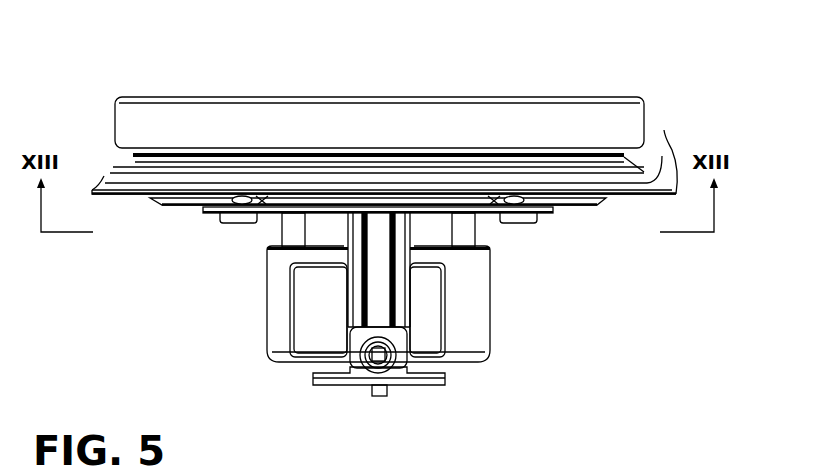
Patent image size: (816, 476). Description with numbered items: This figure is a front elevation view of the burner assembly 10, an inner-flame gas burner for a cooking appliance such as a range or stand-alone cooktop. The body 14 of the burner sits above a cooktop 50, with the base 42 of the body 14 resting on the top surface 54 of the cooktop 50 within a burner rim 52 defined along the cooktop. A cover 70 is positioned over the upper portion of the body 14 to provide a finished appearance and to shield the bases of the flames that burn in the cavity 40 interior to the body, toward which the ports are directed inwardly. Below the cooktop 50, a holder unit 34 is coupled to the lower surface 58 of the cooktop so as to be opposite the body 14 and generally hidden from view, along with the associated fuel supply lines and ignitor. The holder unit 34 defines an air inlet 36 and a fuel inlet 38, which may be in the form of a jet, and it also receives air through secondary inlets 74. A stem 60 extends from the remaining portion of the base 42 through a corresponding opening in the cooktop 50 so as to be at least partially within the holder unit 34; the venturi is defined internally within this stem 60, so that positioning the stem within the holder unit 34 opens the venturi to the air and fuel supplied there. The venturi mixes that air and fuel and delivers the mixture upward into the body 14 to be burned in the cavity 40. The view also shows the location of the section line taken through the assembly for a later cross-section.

The burner assembly 10 is at (383, 234).
The body 14 is at (679, 146).
The holder unit 34 is at (500, 289).
The air inlet 36 is at (313, 318).
The fuel inlet 38 is at (375, 360).
The cavity 40 is at (379, 87).
The base 42 is at (133, 162).
The cooktop 50 is at (415, 130).
The burner rim 52 is at (645, 181).
The top surface 54 is at (101, 187).
The lower surface 58 is at (642, 197).
The stem 60 is at (332, 236).
The cover 70 is at (181, 120).
The secondary inlets 74 is at (318, 226).